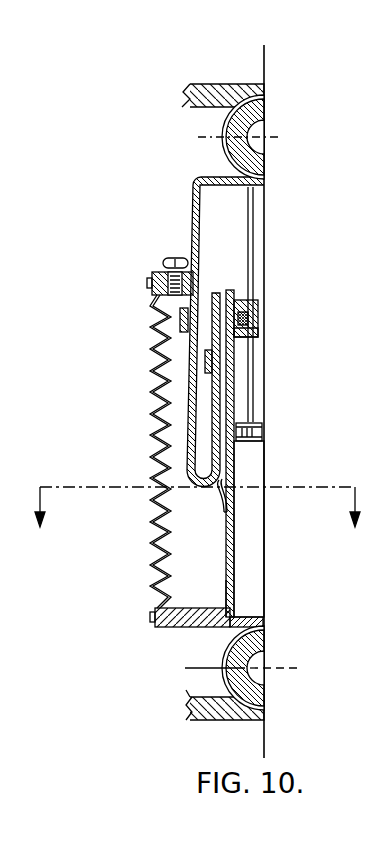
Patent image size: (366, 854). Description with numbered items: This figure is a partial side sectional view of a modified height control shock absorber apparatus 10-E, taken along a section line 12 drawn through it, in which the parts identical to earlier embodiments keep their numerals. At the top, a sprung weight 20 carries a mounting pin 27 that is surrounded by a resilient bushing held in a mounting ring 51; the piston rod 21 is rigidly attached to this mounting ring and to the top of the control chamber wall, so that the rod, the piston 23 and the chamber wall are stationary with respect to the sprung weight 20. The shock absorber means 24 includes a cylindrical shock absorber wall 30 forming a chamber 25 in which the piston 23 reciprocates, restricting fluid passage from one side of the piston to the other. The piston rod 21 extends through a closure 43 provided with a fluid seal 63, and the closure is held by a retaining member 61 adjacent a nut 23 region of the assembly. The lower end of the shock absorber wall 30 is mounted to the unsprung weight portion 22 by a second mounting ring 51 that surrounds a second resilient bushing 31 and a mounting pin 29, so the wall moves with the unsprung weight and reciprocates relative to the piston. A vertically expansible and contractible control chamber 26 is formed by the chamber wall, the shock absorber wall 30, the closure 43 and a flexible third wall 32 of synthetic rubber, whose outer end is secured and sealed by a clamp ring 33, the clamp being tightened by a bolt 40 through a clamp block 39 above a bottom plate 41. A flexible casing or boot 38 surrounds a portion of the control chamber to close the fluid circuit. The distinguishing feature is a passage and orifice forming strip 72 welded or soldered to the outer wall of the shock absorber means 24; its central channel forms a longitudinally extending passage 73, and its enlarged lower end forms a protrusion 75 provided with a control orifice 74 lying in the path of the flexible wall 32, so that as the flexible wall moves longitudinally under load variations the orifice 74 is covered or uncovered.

The height control shock absorber apparatus 10-E is at (206, 175).
The section line 12- 12 is at (195, 518).
The sprung weight 20 is at (225, 93).
The piston rod 21 is at (256, 224).
The unsprung weight portion 22 is at (213, 718).
The piston 23 is at (257, 435).
The shock absorber means 24 is at (241, 564).
The chamber 25 is at (252, 477).
The control chamber 26 is at (213, 202).
The mounting pin 27 is at (257, 129).
The mounting pin 29 is at (248, 662).
The cylindrical shock absorber wall 30 is at (228, 596).
The second resilient bushing 31 is at (258, 168).
The flexible third wall 32 is at (192, 453).
The clamp ring 33 is at (205, 360).
The flexible casing or boot 38 is at (150, 409).
The clamp block 39 is at (156, 275).
The inlet-outlet port 40 is at (170, 258).
The bottom plate 41 is at (182, 628).
The closure 43 is at (250, 335).
The mounting ring 51 is at (226, 120).
The seal block 61 is at (248, 297).
The fluid seal 63 is at (248, 318).
The passage and orifice forming strip 72 is at (227, 510).
The longitudinally extending passage 73 is at (222, 294).
The control orifice 74 is at (212, 492).
The protrusion 75 is at (217, 503).